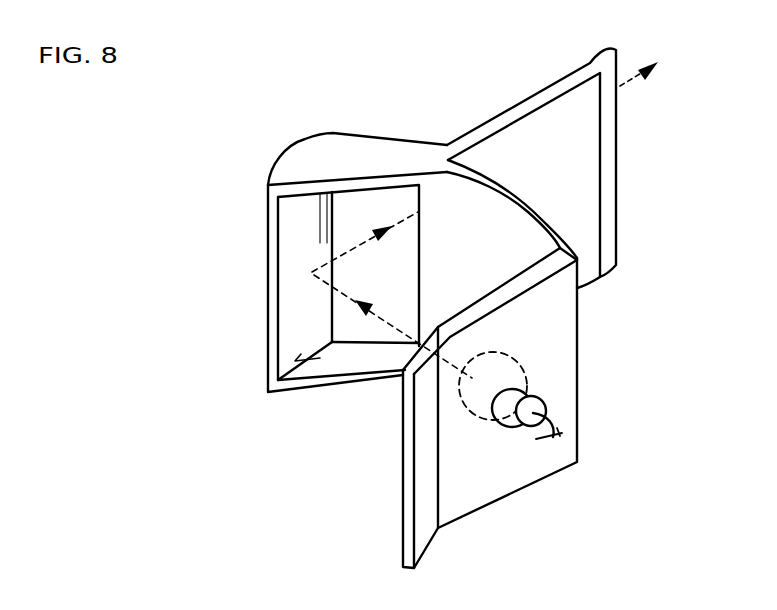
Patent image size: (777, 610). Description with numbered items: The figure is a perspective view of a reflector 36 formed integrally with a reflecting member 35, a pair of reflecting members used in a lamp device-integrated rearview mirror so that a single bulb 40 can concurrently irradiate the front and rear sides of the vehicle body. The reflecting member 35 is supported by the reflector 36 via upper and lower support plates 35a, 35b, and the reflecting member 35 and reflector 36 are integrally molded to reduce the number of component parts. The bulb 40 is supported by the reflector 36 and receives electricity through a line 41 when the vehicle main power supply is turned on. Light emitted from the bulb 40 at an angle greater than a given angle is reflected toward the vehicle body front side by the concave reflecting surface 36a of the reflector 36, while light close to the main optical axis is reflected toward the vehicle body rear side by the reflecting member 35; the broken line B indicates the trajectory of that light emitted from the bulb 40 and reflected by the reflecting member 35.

The reflecting member 35 is at (292, 288).
The upper support plate 35a is at (358, 157).
The lower support plate 35b is at (346, 362).
The reflector 36 is at (523, 478).
The concave reflecting surface 36a is at (492, 230).
The bulb 40 is at (514, 362).
The line 41 is at (548, 421).
The broken line B is at (348, 250).